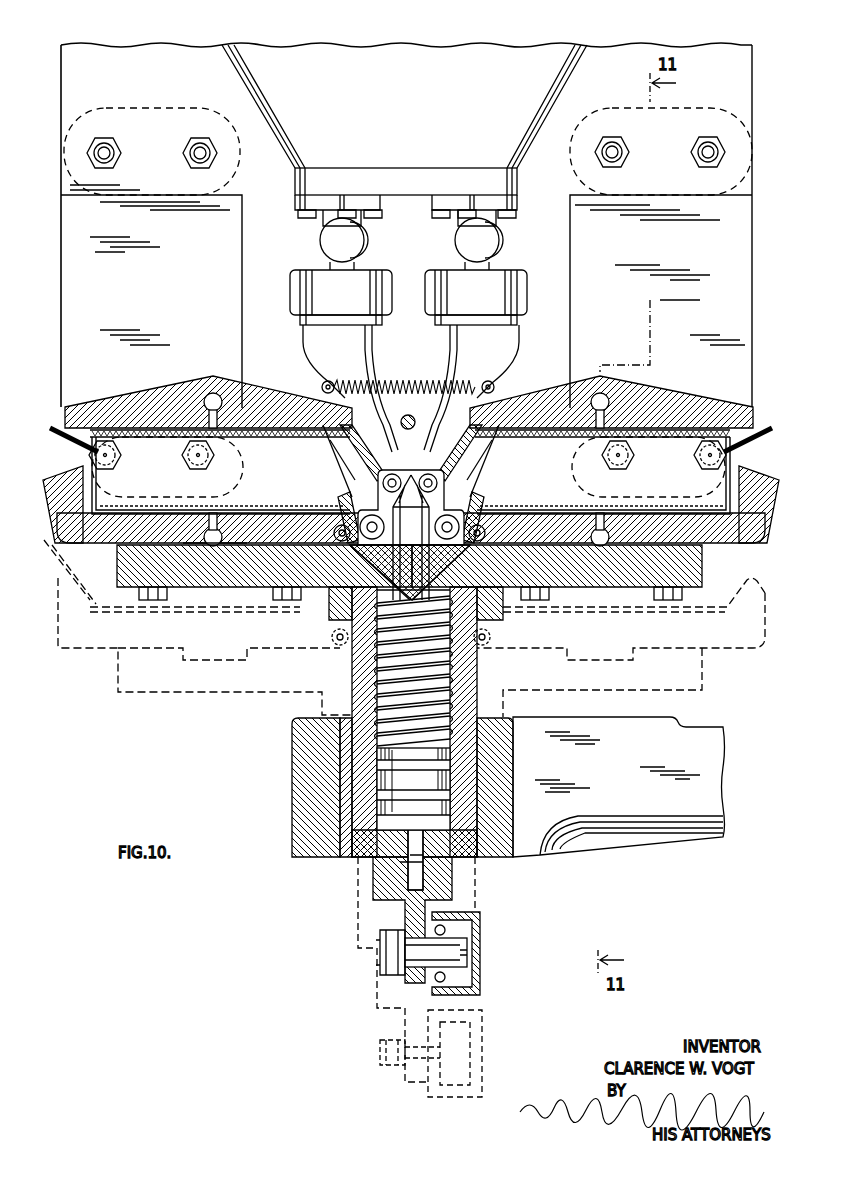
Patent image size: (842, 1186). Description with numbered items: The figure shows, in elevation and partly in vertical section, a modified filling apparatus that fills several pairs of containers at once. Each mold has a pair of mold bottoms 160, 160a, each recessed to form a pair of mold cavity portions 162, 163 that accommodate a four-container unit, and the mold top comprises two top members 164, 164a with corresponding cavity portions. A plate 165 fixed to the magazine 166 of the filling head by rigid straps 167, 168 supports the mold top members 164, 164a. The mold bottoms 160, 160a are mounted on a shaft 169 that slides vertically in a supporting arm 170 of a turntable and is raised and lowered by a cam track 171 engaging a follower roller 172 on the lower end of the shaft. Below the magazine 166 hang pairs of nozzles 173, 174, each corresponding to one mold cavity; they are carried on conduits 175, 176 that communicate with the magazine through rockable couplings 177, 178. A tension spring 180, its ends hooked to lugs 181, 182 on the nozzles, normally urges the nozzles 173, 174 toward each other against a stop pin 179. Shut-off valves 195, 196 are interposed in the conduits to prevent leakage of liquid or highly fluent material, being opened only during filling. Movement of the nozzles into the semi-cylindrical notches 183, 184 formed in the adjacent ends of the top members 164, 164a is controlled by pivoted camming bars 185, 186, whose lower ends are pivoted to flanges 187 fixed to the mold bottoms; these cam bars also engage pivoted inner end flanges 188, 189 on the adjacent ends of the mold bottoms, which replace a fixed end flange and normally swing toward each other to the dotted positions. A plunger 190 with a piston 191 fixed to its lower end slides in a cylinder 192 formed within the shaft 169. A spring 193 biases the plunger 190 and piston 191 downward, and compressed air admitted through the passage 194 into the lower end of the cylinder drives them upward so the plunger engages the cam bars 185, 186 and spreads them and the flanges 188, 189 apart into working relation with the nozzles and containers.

The mold bottom 160 is at (232, 547).
The mold bottom 160a is at (619, 547).
The mold cavity portion 162 is at (282, 480).
The mold cavity portion 163 is at (570, 482).
The mold top member 164 is at (197, 388).
The mold top member 164a is at (660, 400).
The plate 165 is at (158, 52).
The magazine 166 is at (410, 52).
The rigid strap 167 is at (66, 284).
The rigid strap 168 is at (752, 302).
The shaft 169 is at (340, 752).
The supporting arm 170 is at (618, 805).
The cam track 171 is at (480, 932).
The follower roller 172 is at (470, 977).
The nozzle 173 is at (306, 341).
The nozzle 174 is at (514, 336).
The conduit 175 is at (356, 266).
The conduit 176 is at (463, 266).
The rockable coupling 177 is at (300, 297).
The rockable coupling 178 is at (514, 299).
The stop member or pin 179 is at (408, 414).
The tension spring 180 is at (368, 383).
The lug 181 is at (322, 386).
The lug 182 is at (494, 386).
The semi-cylindrical passage or notch 183 is at (362, 478).
The semi-cylindrical passage or notch 184 is at (460, 478).
The pivoted camming bar 185 is at (355, 472).
The pivoted camming bar 186 is at (467, 472).
The flange 187 is at (352, 568).
The inner end flange 188 is at (340, 497).
The inner end flange 189 is at (482, 497).
The plunger 190 is at (410, 476).
The piston 191 is at (400, 806).
The cylinder 192 is at (365, 673).
The spring 193 is at (442, 670).
The passage 194 is at (405, 884).
The shut-off valve 195 is at (320, 238).
The shut-off valve 196 is at (499, 238).